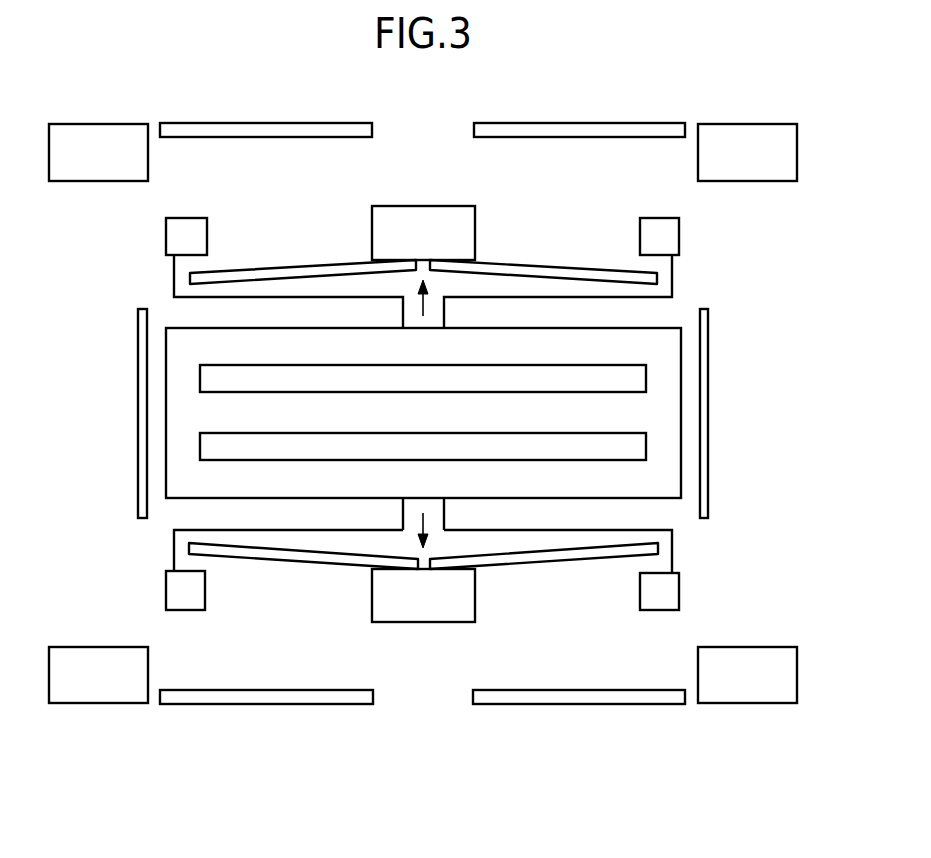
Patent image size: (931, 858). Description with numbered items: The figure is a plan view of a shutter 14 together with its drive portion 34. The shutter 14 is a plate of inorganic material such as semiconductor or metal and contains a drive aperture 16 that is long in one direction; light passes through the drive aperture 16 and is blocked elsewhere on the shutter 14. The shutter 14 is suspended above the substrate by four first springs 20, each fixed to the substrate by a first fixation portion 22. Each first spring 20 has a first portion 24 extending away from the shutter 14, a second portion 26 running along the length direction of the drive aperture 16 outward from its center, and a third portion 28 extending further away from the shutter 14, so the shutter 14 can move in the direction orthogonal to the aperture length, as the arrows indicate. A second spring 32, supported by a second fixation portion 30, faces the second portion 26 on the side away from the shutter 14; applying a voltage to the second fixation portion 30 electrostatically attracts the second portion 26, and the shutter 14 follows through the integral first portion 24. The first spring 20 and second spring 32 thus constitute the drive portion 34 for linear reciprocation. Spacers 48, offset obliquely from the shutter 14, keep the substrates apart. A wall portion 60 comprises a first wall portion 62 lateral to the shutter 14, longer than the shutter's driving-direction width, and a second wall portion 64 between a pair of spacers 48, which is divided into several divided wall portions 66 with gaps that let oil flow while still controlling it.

The shutter 14 is at (475, 413).
The drive aperture 16 is at (636, 381).
The first spring 20 is at (501, 582).
The first fixation portion 22 is at (662, 610).
The first portion 24 is at (446, 512).
The second portion 26 is at (628, 528).
The third portion 28 is at (672, 558).
The second fixation portion 30 is at (475, 600).
The second spring 32 is at (562, 566).
The drive portion 34 is at (161, 522).
The spacer 48 is at (97, 124).
The wall portion 60 is at (460, 466).
The first wall portion 62 is at (138, 393).
The second wall portion 64 is at (482, 466).
The divided wall portion 66 is at (668, 135).